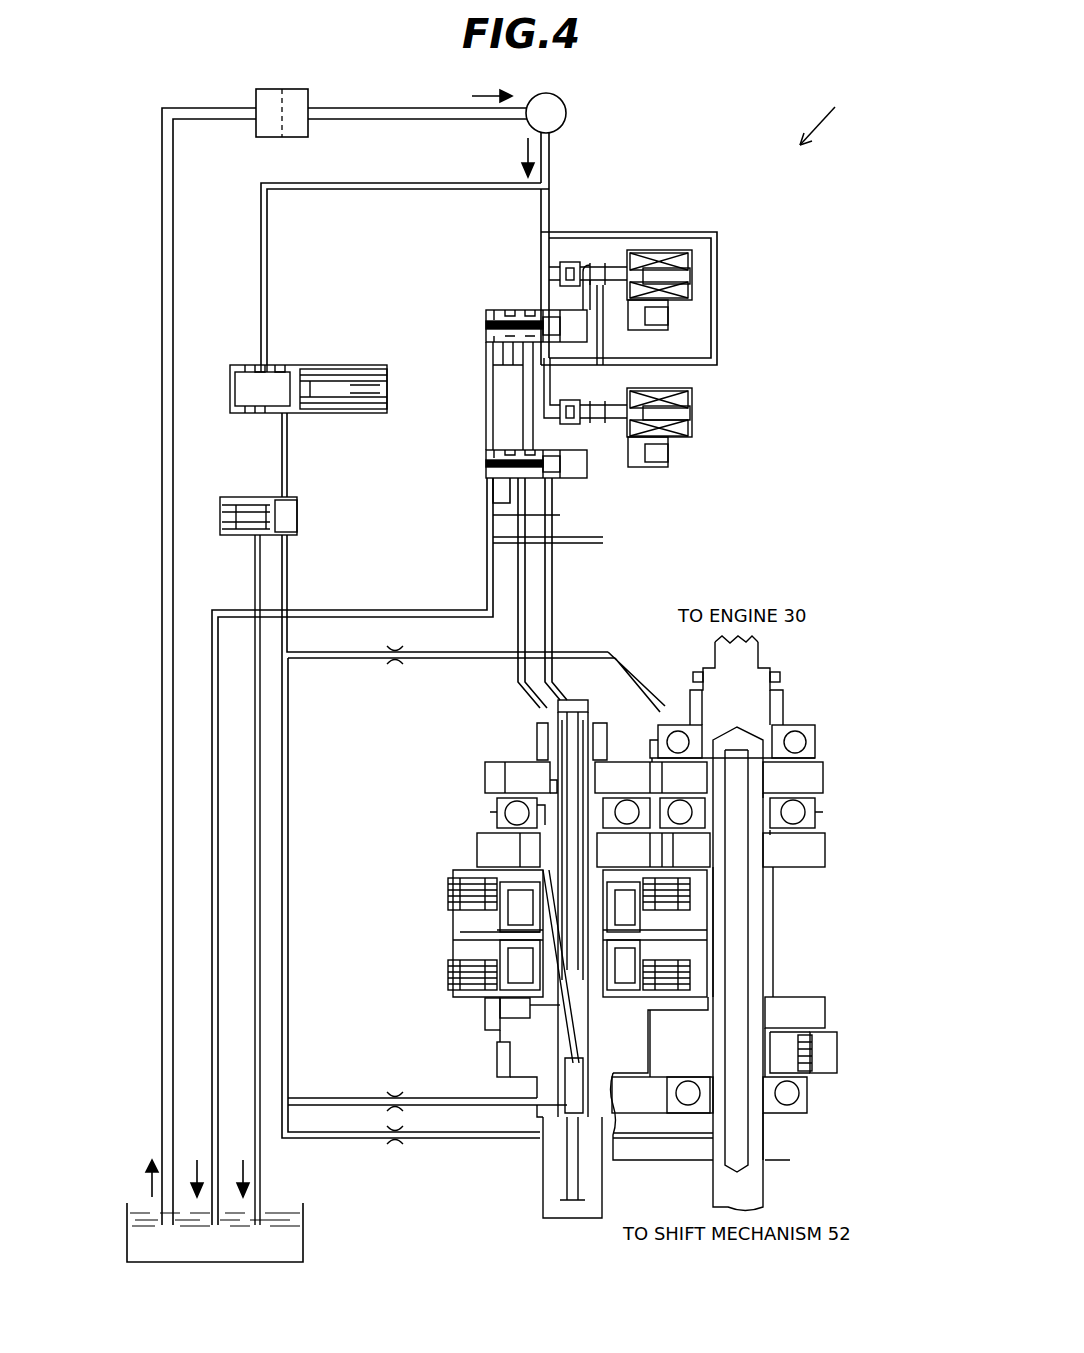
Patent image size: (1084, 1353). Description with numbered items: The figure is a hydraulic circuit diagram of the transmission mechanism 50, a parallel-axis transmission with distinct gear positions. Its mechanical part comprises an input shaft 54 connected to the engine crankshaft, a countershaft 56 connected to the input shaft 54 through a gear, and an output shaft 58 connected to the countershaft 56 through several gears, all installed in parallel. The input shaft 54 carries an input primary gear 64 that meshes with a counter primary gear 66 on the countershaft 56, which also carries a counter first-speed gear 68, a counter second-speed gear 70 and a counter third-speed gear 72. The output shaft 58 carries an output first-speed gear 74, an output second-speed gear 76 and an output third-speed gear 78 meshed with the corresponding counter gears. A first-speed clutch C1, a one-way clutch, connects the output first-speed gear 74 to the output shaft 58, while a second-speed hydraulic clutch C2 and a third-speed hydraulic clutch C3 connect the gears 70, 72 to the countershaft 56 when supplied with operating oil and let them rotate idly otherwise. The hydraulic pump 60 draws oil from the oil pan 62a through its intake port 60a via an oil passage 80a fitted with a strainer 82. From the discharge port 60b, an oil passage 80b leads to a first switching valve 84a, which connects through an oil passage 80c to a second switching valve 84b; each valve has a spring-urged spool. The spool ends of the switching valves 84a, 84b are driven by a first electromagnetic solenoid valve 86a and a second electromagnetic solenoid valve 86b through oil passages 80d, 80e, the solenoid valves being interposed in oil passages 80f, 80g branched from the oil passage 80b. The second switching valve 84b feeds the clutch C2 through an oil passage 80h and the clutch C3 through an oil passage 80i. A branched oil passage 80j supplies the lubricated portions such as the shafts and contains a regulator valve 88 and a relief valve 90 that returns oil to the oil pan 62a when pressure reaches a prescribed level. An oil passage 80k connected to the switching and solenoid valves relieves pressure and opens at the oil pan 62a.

The transmission mechanism 50 is at (832, 119).
The input shaft 54 is at (755, 655).
The countershaft 56 is at (550, 1180).
The output shaft 58 is at (750, 1180).
The hydraulic pump 60 is at (566, 113).
The intake port 60a is at (529, 103).
The discharge port 60b is at (550, 138).
The oil pan 62a is at (303, 1250).
The input primary gear 64 is at (823, 776).
The counter primary gear 66 is at (484, 779).
The counter first-speed gear 68 is at (495, 1060).
The counter second-speed gear 70 is at (483, 1019).
The counter third-speed gear 72 is at (480, 850).
The output first-speed gear 74 is at (837, 1048).
The output second-speed gear 76 is at (825, 1012).
The output third-speed gear 78 is at (825, 855).
The oil passage 80a is at (162, 330).
The oil passage 80b is at (550, 172).
The oil passage 80c is at (528, 400).
The oil passage 80d is at (580, 312).
The oil passage 80e is at (545, 425).
The oil passage 80f is at (553, 280).
The oil passage 80g is at (717, 300).
The oil passage 80h is at (553, 630).
The oil passage 80i is at (518, 636).
The oil passage 80j is at (455, 1120).
The oil passage 80k is at (365, 610).
The strainer 82 is at (308, 97).
The first switching valve 84a is at (486, 315).
The second switching valve 84b is at (486, 455).
The first electromagnetic solenoid valve 86a is at (692, 270).
The second electromagnetic solenoid valve 86b is at (692, 405).
The regulator valve 88 is at (293, 365).
The relief valve 90 is at (297, 497).
The first-speed clutch C1 is at (812, 1070).
The second-speed hydraulic clutch C2 is at (445, 978).
The third-speed hydraulic clutch C3 is at (445, 900).